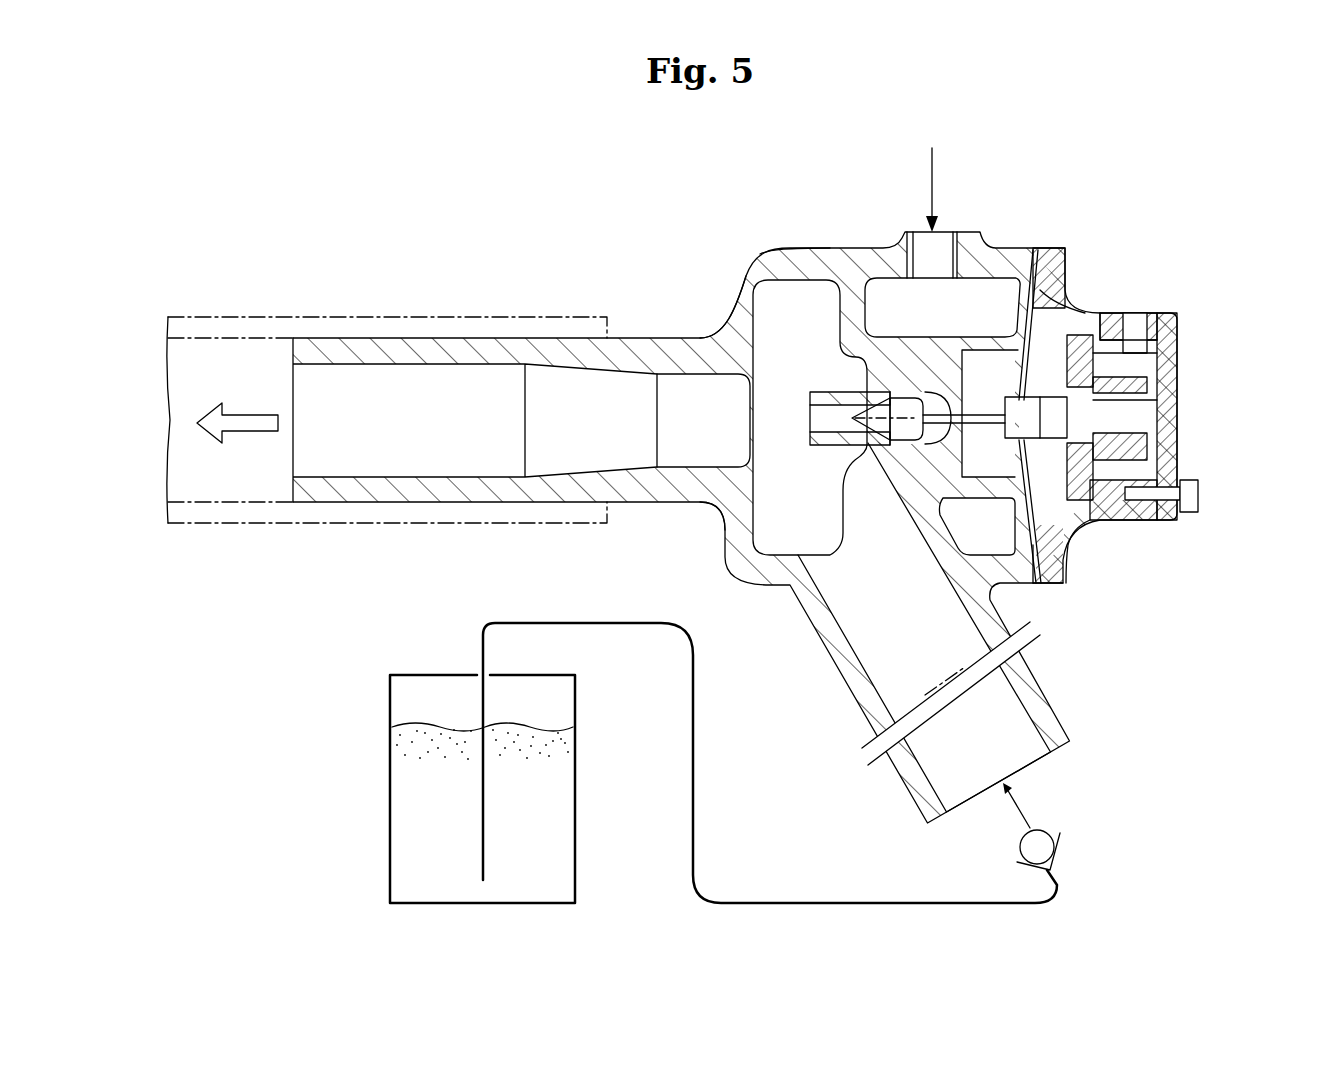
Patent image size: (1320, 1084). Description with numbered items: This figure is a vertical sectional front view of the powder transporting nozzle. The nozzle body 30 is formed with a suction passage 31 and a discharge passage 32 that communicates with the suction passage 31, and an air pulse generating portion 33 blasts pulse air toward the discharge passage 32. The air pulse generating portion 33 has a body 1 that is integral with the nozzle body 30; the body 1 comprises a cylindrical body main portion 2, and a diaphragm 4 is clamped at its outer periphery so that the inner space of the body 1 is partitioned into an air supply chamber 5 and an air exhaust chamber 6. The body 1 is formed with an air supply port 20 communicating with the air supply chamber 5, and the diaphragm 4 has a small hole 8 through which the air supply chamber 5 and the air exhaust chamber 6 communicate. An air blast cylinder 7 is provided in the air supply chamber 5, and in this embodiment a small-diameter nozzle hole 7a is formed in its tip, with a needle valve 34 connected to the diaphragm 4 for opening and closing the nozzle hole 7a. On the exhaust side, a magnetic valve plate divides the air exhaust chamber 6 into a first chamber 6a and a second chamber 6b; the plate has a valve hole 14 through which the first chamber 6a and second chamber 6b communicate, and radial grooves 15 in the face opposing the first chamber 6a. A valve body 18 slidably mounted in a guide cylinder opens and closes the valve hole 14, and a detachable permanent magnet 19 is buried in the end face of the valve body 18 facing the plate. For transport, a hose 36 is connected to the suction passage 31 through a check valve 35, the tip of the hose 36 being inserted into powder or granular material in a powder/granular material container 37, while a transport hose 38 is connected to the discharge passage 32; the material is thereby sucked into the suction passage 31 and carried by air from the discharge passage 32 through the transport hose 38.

The body 1 is at (1000, 245).
The body main portion 2 is at (1018, 258).
The diaphragm 4 is at (1040, 317).
The air supply chamber 5 is at (886, 290).
The air exhaust chamber 6 is at (1087, 313).
The first chamber 6a is at (1042, 523).
The second chamber 6b is at (1150, 362).
The air blast cylinder 7 is at (998, 492).
The nozzle hole 7a is at (818, 418).
The small hole 8 is at (1057, 583).
The valve hole 14 is at (1008, 398).
The radial grooves 15 is at (1087, 330).
The valve body 18 is at (1155, 400).
The permanent magnet 19 is at (1160, 432).
The air supply port 20 is at (940, 245).
The nozzle body 30 is at (668, 334).
The suction passage 31 is at (1017, 725).
The discharge passage 32 is at (456, 390).
The air pulse generating portion 33 is at (818, 244).
The needle valve 34 is at (886, 400).
The check valve 35 is at (1055, 832).
The hose 36 is at (815, 880).
The powder/granular material container 37 is at (575, 791).
The transport hose 38 is at (287, 320).